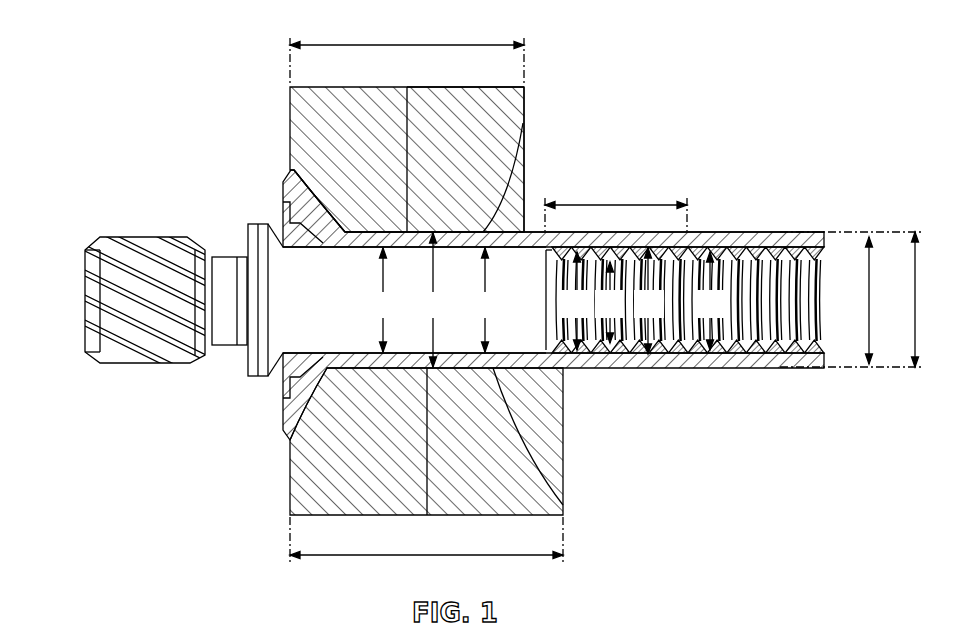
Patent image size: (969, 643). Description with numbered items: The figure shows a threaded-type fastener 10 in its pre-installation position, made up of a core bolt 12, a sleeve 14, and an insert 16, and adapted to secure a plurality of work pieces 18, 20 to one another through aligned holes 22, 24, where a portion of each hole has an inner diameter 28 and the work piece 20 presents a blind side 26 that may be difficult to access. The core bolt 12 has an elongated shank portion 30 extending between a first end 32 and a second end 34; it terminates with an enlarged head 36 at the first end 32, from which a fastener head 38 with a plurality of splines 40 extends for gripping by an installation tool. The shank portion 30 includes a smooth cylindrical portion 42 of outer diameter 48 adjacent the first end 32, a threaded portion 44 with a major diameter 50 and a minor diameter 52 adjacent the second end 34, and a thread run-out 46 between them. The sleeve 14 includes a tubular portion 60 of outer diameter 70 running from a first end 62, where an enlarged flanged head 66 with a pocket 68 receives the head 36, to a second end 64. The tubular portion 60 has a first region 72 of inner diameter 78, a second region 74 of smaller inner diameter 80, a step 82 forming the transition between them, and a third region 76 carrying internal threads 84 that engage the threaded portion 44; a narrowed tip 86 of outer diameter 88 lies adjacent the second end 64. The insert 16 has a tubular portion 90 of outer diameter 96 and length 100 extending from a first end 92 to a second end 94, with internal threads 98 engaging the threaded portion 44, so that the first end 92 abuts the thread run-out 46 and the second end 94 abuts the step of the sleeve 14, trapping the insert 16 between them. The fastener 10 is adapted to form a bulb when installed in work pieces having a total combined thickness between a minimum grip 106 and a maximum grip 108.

The fastener 10 is at (133, 68).
The core bolt 12 is at (83, 322).
The sleeve 14 is at (563, 418).
The insert 16 is at (603, 360).
The work piece 18 is at (305, 97).
The work piece 20 is at (510, 100).
The hole 22 is at (295, 130).
The hole 24 is at (523, 124).
The blind side 26 is at (525, 163).
The inner diameter 28 is at (433, 300).
The elongated shank portion 30 is at (360, 332).
The first end 32 is at (253, 224).
The second end 34 is at (737, 323).
The enlarged head 36 is at (247, 237).
The fastener head 38 is at (83, 270).
The splines 40 is at (118, 237).
The smooth cylindrical portion 42 is at (300, 335).
The threaded portion 44 is at (752, 282).
The thread run-out 46 is at (550, 266).
The outer diameter 48 is at (383, 300).
The major diameter 50 is at (574, 301).
The minor diameter 52 is at (609, 302).
The tubular portion 60 is at (507, 237).
The first end 62 is at (312, 440).
The second end 64 is at (775, 232).
The flanged head 66 is at (283, 418).
The pocket 68 is at (302, 233).
The outer diameter 70 is at (913, 290).
The first region 72 is at (563, 492).
The second region 74 is at (695, 250).
The third region 76 is at (753, 250).
The inner diameter 78 is at (485, 300).
The inner diameter 80 is at (711, 301).
The step 82 is at (703, 358).
The internal threads 84 is at (755, 368).
The narrowed tip 86 is at (803, 360).
The outer diameter 88 is at (867, 285).
The tubular portion 90 is at (630, 360).
The first end 92 is at (565, 370).
The second end 94 is at (680, 360).
The outer diameter 96 is at (649, 301).
The internal threads 98 is at (643, 360).
The length 100 is at (617, 203).
The minimum grip 106 is at (372, 43).
The maximum grip 108 is at (428, 557).